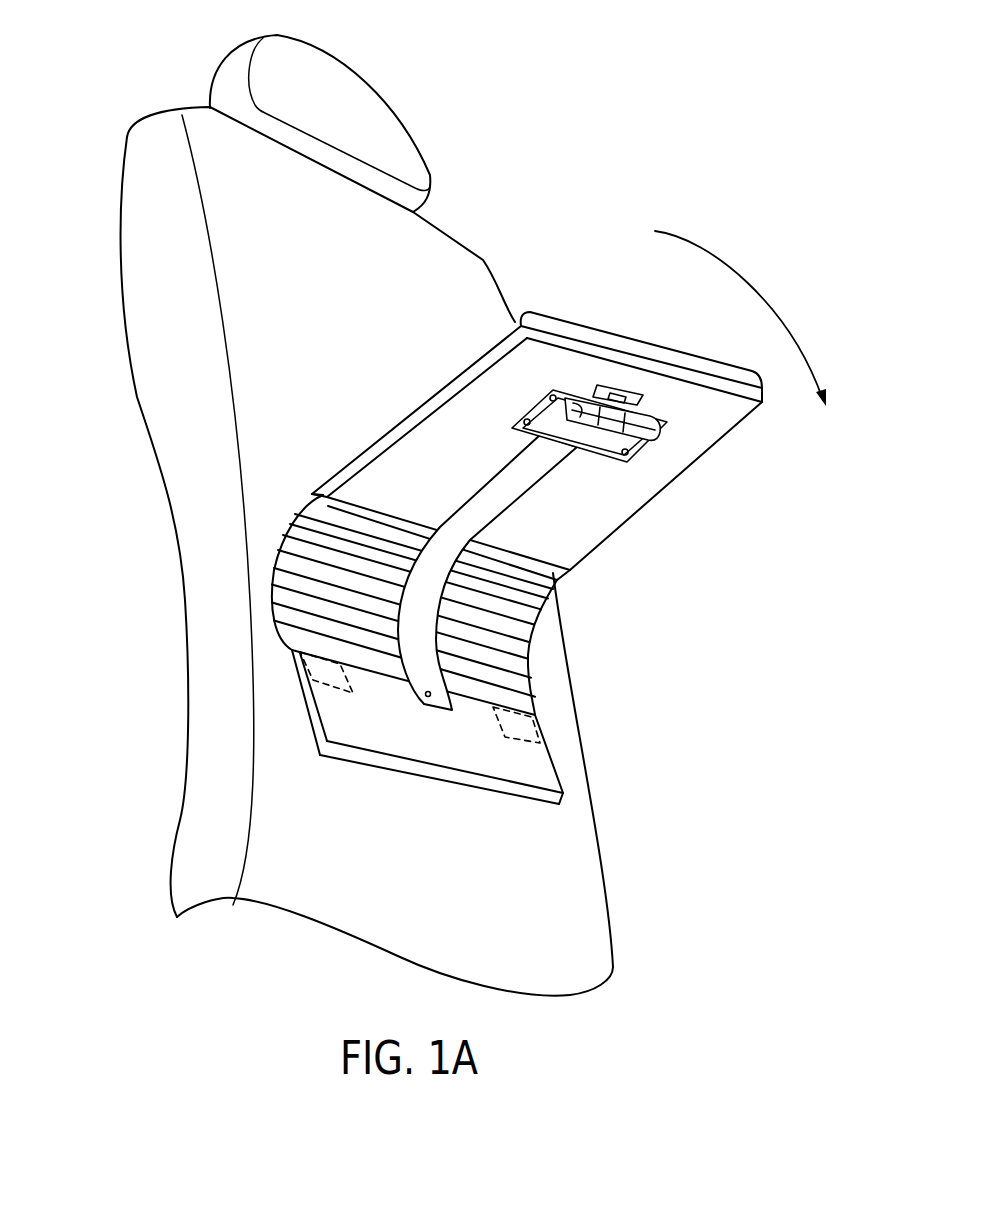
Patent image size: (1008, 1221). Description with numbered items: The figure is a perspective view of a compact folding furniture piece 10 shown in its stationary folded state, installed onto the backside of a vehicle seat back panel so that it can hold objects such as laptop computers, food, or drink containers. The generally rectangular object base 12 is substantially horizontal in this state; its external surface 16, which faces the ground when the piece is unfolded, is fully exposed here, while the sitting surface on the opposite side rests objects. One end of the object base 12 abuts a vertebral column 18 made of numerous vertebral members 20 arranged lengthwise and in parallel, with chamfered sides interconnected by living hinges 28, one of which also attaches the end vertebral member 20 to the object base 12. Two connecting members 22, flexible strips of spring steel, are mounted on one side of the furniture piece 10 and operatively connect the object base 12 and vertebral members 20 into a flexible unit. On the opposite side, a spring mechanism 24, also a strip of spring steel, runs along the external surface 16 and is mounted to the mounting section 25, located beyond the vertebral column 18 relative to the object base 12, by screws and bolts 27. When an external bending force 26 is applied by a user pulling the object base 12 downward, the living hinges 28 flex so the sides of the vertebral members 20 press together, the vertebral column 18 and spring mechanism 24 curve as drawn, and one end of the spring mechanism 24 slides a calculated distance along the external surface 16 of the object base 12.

The compact folding furniture piece 10 is at (436, 348).
The object base 12 is at (730, 437).
The external surface 16 is at (635, 497).
The vertebral column 18 is at (558, 614).
The vertebral members 20 is at (288, 568).
The connecting members 22 is at (300, 655).
The spring mechanism 24 is at (498, 494).
The mounting section 25 is at (400, 767).
The external bending force 26 is at (773, 303).
The screws and bolts 27 is at (431, 700).
The living hinges 28 is at (658, 346).